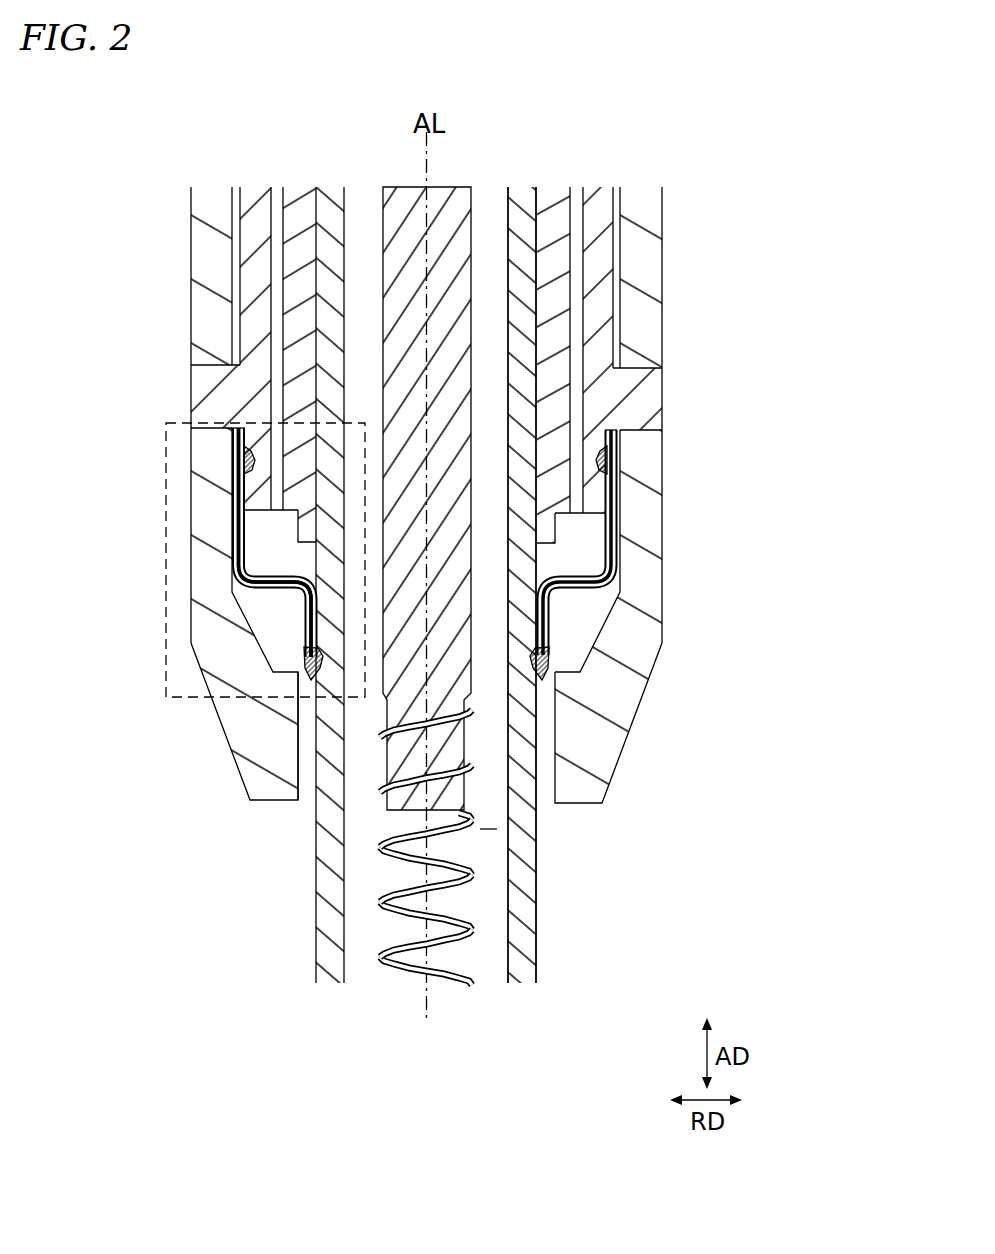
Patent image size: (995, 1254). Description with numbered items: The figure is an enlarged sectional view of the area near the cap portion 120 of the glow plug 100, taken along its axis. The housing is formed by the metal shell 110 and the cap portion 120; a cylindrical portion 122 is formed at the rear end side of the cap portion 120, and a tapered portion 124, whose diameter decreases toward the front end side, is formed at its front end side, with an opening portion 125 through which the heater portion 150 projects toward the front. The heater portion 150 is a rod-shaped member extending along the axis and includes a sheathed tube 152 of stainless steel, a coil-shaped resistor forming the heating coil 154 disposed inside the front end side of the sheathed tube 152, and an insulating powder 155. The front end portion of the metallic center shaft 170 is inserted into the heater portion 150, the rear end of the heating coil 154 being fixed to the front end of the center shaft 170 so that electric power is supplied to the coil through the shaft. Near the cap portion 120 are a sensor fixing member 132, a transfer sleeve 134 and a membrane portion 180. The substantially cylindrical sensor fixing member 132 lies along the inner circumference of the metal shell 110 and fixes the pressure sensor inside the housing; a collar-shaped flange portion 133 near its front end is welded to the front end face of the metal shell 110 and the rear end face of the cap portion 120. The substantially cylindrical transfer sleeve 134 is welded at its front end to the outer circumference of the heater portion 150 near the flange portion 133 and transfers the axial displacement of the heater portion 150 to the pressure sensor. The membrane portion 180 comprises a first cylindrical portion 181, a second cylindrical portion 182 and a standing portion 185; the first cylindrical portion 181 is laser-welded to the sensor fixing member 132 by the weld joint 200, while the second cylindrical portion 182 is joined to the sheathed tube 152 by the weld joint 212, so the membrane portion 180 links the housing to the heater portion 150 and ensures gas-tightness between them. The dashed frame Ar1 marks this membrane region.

The glow plug 100 is at (752, 186).
The metal shell 110 is at (191, 224).
The cap portion 120 is at (232, 755).
The cylindrical portion 122 is at (662, 617).
The tapered portion 124 is at (645, 679).
The opening portion 125 is at (302, 811).
The sensor fixing member 132 is at (258, 289).
The flange portion 133 is at (207, 378).
The transfer sleeve 134 is at (298, 328).
The heater portion 150 is at (535, 890).
The sheathed tube 152 is at (518, 936).
The heating coil 154 is at (397, 921).
The insulating powder 155 is at (480, 829).
The center shaft 170 is at (473, 207).
The membrane portion 180 is at (233, 503).
The first cylindrical portion 181 is at (233, 518).
The second cylindrical portion 182 is at (304, 637).
The standing portion 185 is at (252, 575).
The weld joint 200 is at (245, 455).
The weld joint 212 is at (306, 652).
The region Ar1 is at (166, 697).